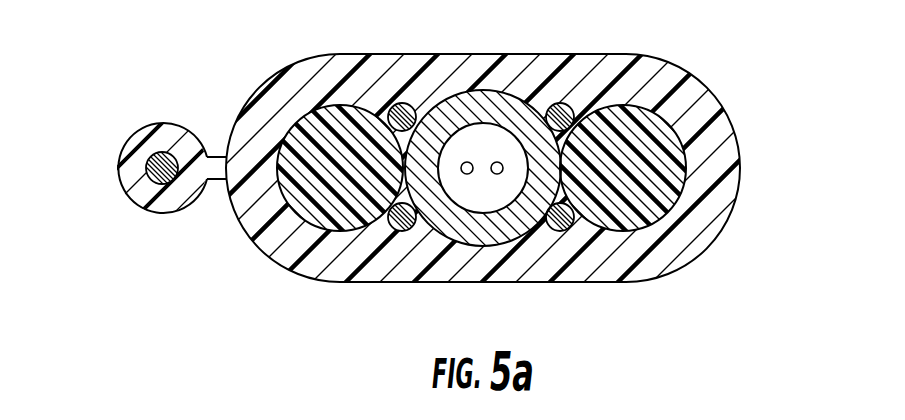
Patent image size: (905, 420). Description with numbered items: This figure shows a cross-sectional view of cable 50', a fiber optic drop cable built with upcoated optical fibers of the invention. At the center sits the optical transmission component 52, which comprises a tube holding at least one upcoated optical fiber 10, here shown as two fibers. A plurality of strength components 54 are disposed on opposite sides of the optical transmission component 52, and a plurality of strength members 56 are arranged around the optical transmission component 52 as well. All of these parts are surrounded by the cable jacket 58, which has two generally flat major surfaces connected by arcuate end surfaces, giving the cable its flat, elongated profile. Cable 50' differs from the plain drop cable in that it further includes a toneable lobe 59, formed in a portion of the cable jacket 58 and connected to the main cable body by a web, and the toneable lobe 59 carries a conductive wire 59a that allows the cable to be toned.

The cable 50' is at (143, 27).
The cable jacket 58 is at (483, 57).
The optical transmission component 52 is at (540, 101).
The strength components 54 is at (323, 130).
The strength members 56 is at (400, 104).
The upcoated optical fiber 10 is at (467, 174).
The toneable lobe 59 is at (222, 236).
The conductive wire 59a is at (145, 174).